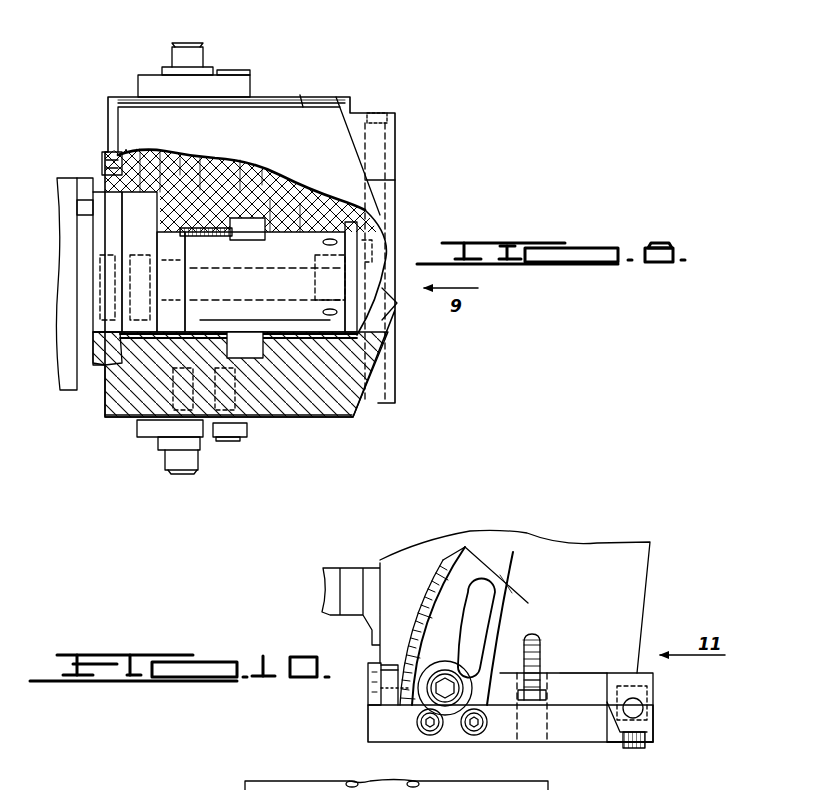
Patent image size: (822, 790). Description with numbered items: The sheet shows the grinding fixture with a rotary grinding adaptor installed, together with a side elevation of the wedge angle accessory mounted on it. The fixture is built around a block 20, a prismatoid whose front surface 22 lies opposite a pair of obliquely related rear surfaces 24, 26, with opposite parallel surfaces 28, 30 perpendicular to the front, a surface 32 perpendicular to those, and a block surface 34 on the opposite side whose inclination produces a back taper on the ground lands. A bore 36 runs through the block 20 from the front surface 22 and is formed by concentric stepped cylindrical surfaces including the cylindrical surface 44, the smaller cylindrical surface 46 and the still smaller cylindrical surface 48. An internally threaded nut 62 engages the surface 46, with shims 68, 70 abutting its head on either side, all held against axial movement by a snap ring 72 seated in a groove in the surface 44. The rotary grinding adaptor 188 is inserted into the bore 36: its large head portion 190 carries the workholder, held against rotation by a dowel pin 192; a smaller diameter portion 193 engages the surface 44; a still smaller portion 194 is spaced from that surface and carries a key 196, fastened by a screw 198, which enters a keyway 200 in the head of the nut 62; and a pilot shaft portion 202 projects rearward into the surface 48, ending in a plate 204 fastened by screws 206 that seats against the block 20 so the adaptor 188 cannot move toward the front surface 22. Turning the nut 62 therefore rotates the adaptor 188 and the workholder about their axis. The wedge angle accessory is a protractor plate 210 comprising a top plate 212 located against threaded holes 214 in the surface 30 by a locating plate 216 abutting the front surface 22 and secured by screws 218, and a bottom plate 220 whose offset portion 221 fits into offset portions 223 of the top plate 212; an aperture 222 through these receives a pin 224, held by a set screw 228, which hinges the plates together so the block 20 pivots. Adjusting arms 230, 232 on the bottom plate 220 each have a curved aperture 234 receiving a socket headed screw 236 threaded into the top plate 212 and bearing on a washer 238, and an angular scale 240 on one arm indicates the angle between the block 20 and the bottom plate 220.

In FIG. 8, the block 20 is at (298, 94).
In FIG. 8, the front surface 22 is at (108, 115).
In FIG. 10, the front surface 22 is at (375, 593).
In FIG. 8, the rear surface 24 is at (330, 123).
In FIG. 8, the rear surface 26 is at (385, 400).
In FIG. 8, the parallel surface 28 is at (128, 107).
In FIG. 10, the parallel surface 30 is at (585, 676).
In FIG. 8, the block surface 32 is at (300, 420).
In FIG. 10, the block surface 32 is at (610, 545).
In FIG. 8, the block surface 34 is at (262, 101).
In FIG. 8, the bore 36 is at (247, 229).
In FIG. 8, the cylindrical surface 44 is at (166, 185).
In FIG. 8, the cylindrical surface 46 is at (270, 179).
In FIG. 8, the cylindrical surface 48 is at (297, 240).
In FIG. 8, the nut 62 is at (250, 183).
In FIG. 8, the shim 68 is at (203, 180).
In FIG. 8, the shim 70 is at (237, 174).
In FIG. 8, the snap ring 72 is at (181, 173).
In FIG. 8, the rotary grinding adaptor 188 is at (138, 339).
In FIG. 8, the head portion 190 is at (149, 180).
In FIG. 8, the dowel pin 192 is at (100, 192).
In FIG. 8, the smaller diameter portion 193 is at (128, 420).
In FIG. 8, the still smaller diameter portion 194 is at (190, 282).
In FIG. 8, the key 196 is at (190, 252).
In FIG. 8, the screw 198 is at (181, 233).
In FIG. 8, the keyway 200 is at (241, 190).
In FIG. 8, the pilot shaft portion 202 is at (277, 233).
In FIG. 8, the plate 204 is at (388, 316).
In FIG. 8, the screws 206 is at (240, 374).
In FIG. 10, the protractor plate 210 is at (362, 709).
In FIG. 10, the top plate 212 is at (572, 677).
In FIG. 10, the threaded holes 214 is at (555, 612).
In FIG. 10, the locating plate 216 is at (367, 670).
In FIG. 10, the screws 218 is at (538, 665).
In FIG. 10, the bottom plate 220 is at (575, 732).
In FIG. 10, the offset portion 221 is at (655, 740).
In FIG. 10, the aperture 222 is at (634, 700).
In FIG. 10, the offset portions 223 is at (647, 690).
In FIG. 10, the pin 224 is at (645, 708).
In FIG. 10, the set screw 228 is at (616, 762).
In FIG. 8, the adjusting arm 230 is at (150, 433).
In FIG. 10, the adjusting arm 230 is at (513, 594).
In FIG. 8, the adjusting arm 232 is at (247, 98).
In FIG. 10, the curved aperture 234 is at (494, 586).
In FIG. 8, the socket headed screw 236 is at (198, 52).
In FIG. 10, the socket headed screw 236 is at (436, 686).
In FIG. 8, the washer 238 is at (215, 72).
In FIG. 10, the washer 238 is at (468, 680).
In FIG. 10, the angular scale 240 is at (447, 570).